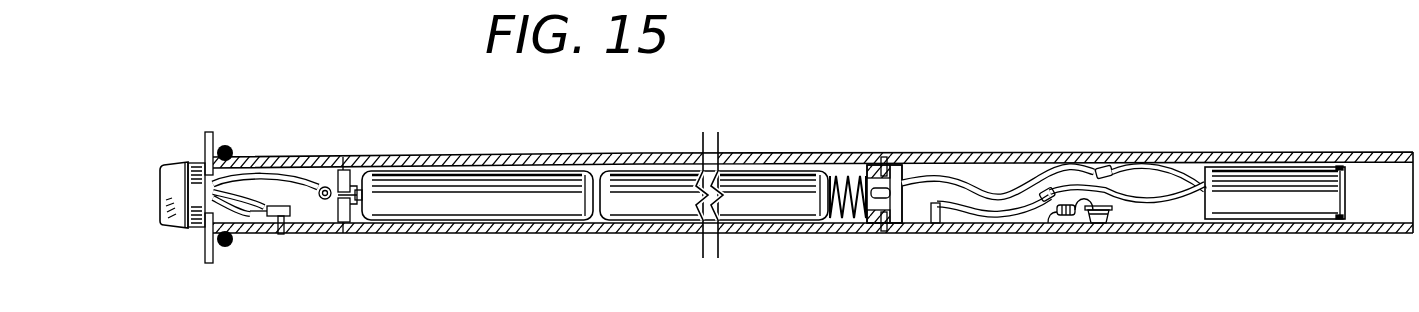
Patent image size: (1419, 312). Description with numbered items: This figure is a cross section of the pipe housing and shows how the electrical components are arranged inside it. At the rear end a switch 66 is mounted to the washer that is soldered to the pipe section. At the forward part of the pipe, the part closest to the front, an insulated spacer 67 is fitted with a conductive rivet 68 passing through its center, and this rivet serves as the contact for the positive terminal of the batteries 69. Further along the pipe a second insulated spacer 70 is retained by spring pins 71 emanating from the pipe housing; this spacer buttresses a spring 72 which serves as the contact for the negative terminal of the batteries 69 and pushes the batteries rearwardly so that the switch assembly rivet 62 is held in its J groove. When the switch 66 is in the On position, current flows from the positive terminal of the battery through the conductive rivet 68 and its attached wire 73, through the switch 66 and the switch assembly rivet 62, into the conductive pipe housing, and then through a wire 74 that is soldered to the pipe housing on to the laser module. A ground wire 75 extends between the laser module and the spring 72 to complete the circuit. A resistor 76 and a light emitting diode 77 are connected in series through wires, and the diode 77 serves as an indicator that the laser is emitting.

The switch assembly rivet 62 is at (281, 233).
The switch 66 is at (175, 167).
The insulated spacer 67 is at (343, 178).
The conductive rivet 68 is at (343, 223).
The batteries 69 is at (364, 196).
The insulated spacer 70 is at (898, 175).
The spring pins 71 is at (884, 158).
The spring 72 is at (845, 186).
The wire 73 is at (271, 182).
The wire 74 is at (993, 217).
The ground wire 75 is at (1019, 178).
The resistor 76 is at (1057, 221).
The light emitting diode 77 is at (1106, 226).